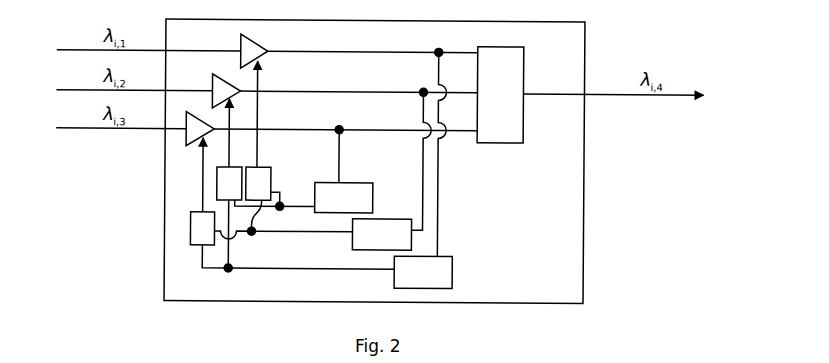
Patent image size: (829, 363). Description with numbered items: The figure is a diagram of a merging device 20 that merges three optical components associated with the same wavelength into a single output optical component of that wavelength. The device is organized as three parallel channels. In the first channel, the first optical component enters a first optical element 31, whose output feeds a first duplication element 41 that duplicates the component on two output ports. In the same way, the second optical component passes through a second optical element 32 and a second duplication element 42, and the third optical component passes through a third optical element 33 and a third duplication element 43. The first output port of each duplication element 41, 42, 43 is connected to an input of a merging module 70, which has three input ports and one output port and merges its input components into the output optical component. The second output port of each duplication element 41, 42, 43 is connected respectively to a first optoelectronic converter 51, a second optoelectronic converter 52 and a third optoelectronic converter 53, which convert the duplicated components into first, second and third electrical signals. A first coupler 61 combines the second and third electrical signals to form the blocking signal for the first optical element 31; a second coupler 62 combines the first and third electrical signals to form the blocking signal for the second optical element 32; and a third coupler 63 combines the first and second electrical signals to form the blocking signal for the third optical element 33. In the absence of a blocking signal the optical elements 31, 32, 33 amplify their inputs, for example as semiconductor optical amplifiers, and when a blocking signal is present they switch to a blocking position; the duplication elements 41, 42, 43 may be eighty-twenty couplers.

The merging device 20 is at (445, 302).
The first optical element 31 is at (257, 42).
The second optical element 32 is at (215, 77).
The third optical element 33 is at (198, 140).
The first duplication element 41 is at (440, 50).
The second duplication element 42 is at (421, 90).
The third duplication element 43 is at (341, 129).
The first optoelectronic converter 51 is at (453, 277).
The second optoelectronic converter 52 is at (388, 219).
The third optoelectronic converter 53 is at (374, 194).
The first coupler 61 is at (260, 168).
The second coupler 62 is at (229, 167).
The third coupler 63 is at (195, 246).
The merging module 70 is at (525, 127).